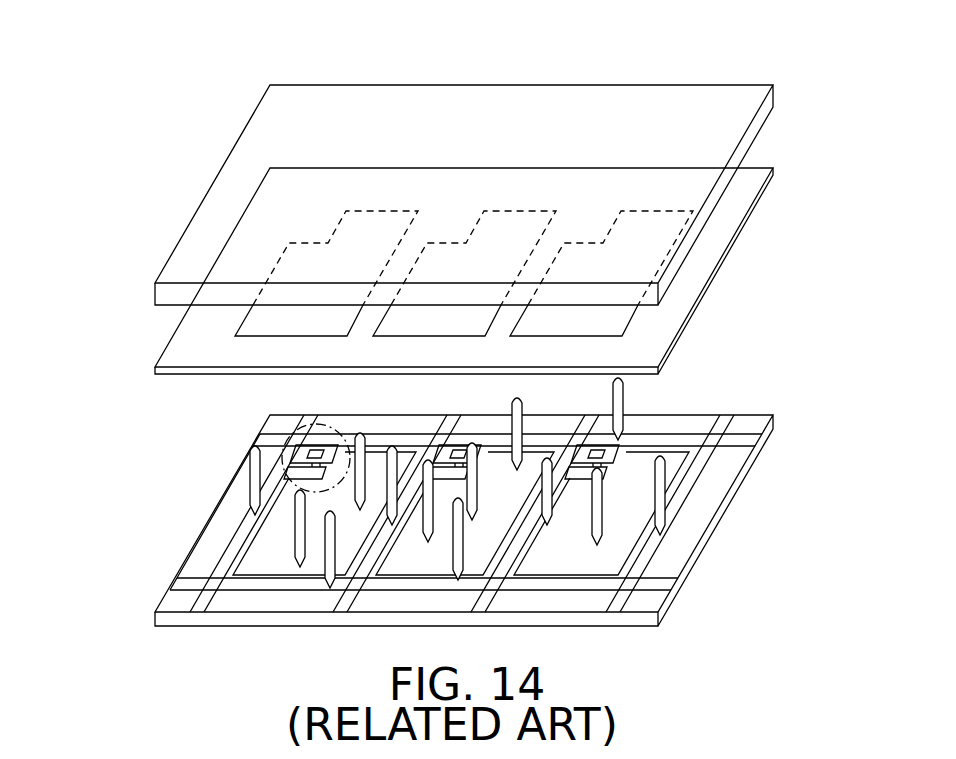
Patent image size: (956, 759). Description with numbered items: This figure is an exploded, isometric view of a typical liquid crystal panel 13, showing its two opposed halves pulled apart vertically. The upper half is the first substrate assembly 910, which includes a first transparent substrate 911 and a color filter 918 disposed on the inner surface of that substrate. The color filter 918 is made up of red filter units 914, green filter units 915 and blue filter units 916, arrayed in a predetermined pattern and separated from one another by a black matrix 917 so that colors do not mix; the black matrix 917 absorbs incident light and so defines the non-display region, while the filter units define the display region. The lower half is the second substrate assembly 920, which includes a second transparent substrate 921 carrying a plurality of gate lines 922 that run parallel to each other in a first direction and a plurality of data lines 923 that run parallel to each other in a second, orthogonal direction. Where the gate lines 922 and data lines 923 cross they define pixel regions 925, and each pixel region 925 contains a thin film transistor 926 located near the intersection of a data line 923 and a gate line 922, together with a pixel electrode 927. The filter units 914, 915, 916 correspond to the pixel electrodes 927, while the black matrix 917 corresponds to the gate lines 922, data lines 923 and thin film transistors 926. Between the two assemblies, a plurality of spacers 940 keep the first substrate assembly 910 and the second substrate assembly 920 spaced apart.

The liquid crystal panel 13 is at (532, 26).
The first substrate assembly 910 is at (823, 210).
The first transparent substrate 911 is at (698, 182).
The red filter units 914 is at (347, 320).
The green filter units 915 is at (479, 322).
The blue filter units 916 is at (617, 320).
The black matrix 917 is at (675, 315).
The color filter 918 is at (698, 307).
The second substrate assembly 920 is at (198, 388).
The second transparent substrate 921 is at (167, 615).
The gate lines 922 is at (262, 436).
The data lines 923 is at (250, 527).
The pixel region 925 is at (232, 578).
The thin film transistor 926 is at (288, 438).
The pixel electrode 927 is at (257, 560).
The spacers 940 is at (660, 488).